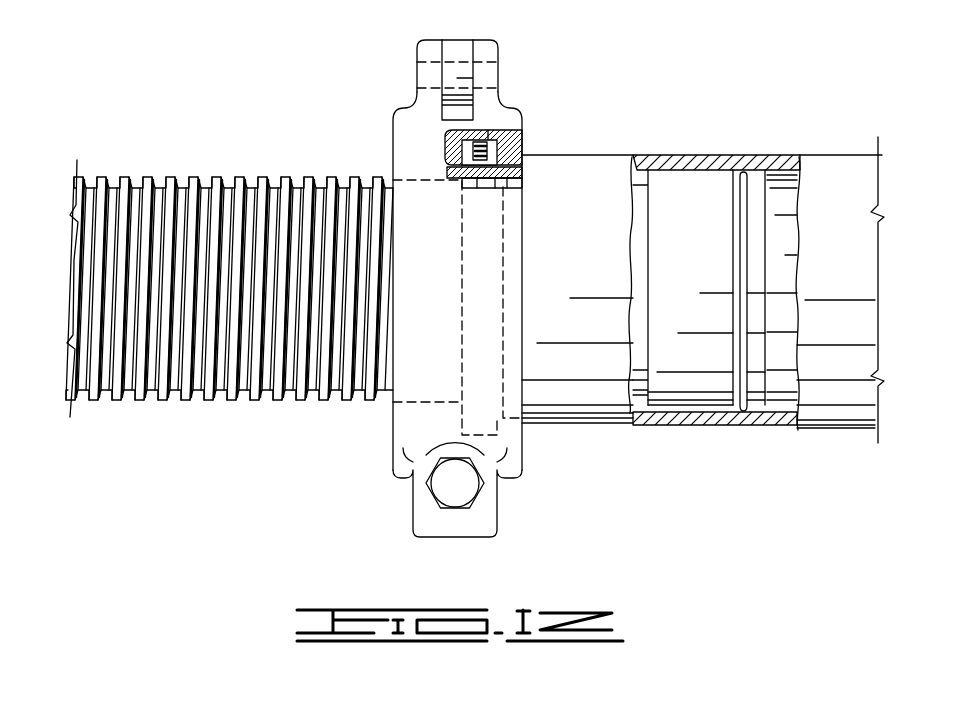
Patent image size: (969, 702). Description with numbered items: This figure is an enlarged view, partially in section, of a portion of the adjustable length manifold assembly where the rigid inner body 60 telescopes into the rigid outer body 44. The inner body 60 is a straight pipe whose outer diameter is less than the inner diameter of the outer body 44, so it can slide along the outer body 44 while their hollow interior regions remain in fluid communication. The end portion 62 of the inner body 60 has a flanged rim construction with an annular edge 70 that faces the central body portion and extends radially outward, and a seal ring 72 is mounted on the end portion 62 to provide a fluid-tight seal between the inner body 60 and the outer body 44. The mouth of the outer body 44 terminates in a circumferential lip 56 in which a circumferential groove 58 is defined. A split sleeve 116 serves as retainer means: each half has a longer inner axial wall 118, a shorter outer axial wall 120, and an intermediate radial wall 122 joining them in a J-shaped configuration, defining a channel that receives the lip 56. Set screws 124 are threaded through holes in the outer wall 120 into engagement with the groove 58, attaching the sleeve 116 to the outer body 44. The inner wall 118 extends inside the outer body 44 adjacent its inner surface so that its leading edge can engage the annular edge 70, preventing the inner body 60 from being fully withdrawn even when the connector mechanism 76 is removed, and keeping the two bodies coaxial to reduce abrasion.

The outer body 44 is at (835, 148).
The circumferential lip 56 is at (511, 149).
The circumferential groove 58 is at (482, 182).
The inner body 60 is at (212, 408).
The end portion 62 is at (698, 390).
The annular edge 70 is at (642, 162).
The seal ring 72 is at (735, 202).
The connector mechanism 76 is at (509, 41).
The sleeve 116 is at (452, 190).
The inner axial wall 118 is at (493, 182).
The outer axial wall 120 is at (460, 132).
The intermediate radial wall 122 is at (462, 157).
The set screws 124 is at (505, 122).